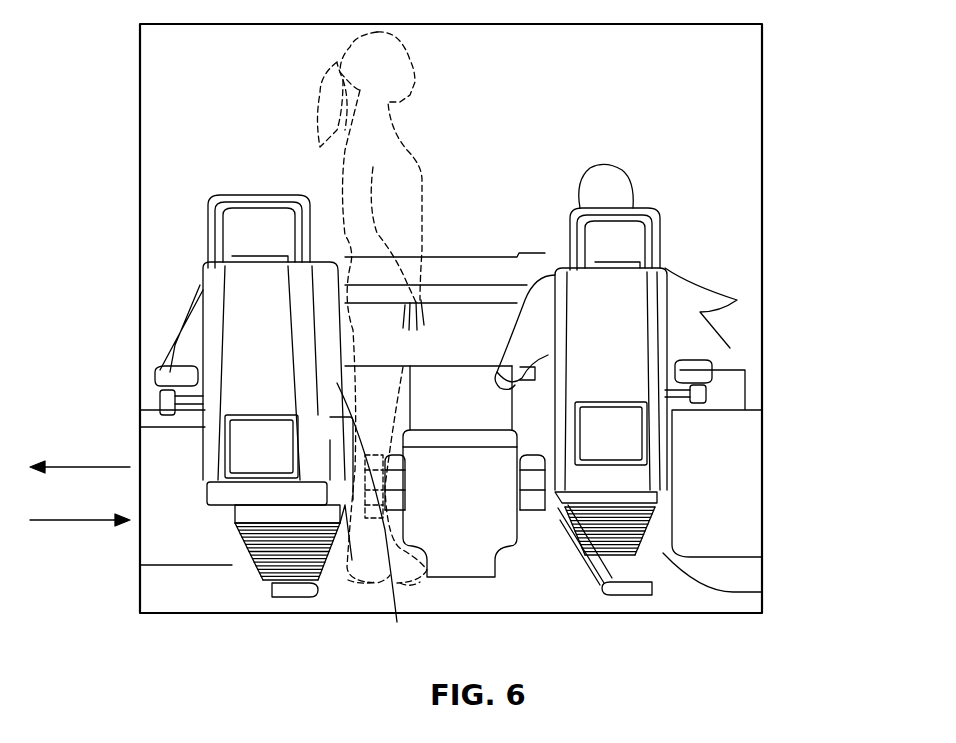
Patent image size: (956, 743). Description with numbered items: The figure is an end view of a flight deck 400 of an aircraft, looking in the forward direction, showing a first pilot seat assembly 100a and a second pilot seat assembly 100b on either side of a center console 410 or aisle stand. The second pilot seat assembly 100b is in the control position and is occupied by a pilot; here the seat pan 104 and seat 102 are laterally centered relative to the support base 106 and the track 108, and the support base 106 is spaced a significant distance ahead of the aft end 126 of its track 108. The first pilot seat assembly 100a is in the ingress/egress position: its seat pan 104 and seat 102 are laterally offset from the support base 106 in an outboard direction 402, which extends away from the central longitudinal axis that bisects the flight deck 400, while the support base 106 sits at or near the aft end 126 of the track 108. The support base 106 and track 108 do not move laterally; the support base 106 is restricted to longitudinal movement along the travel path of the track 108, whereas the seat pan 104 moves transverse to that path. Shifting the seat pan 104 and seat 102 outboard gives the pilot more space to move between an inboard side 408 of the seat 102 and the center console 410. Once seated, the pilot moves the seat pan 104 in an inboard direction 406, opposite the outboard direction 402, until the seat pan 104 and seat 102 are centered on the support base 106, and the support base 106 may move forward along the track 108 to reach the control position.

The flight deck 400 is at (178, 254).
The first pilot seat assembly 100a is at (218, 323).
The second pilot seat assembly 100b is at (640, 330).
The seat 102 is at (210, 372).
The seat pan 104 is at (220, 495).
The support base 106 is at (262, 540).
The track 108 is at (295, 592).
The aft end 126 is at (275, 597).
The outboard direction 402 is at (73, 465).
The inboard direction 406 is at (70, 522).
The inboard side 408 is at (382, 521).
The center console 410 is at (460, 495).